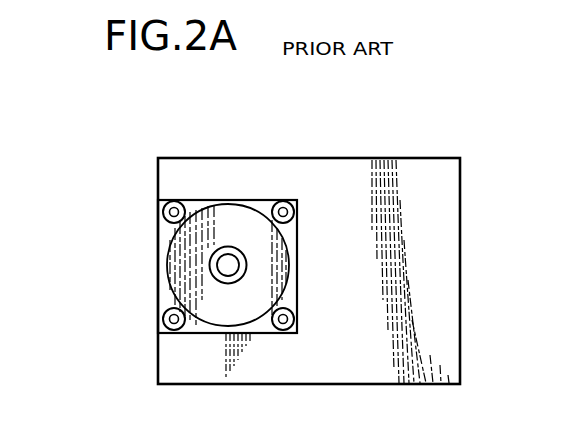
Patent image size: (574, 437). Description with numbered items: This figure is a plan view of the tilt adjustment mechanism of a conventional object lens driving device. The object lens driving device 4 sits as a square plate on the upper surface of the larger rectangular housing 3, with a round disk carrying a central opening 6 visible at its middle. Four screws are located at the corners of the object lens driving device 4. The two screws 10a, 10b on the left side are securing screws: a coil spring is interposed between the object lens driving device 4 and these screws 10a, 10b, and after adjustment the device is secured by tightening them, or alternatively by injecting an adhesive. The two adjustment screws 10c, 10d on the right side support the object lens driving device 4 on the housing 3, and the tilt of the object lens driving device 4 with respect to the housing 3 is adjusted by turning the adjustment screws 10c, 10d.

The housing 3 is at (354, 158).
The object lens driving device 4 is at (210, 200).
The center hole 6 is at (222, 267).
The screw 10a is at (163, 319).
The screw 10b is at (163, 210).
The adjustment screw 10c is at (290, 331).
The adjustment screw 10d is at (285, 203).